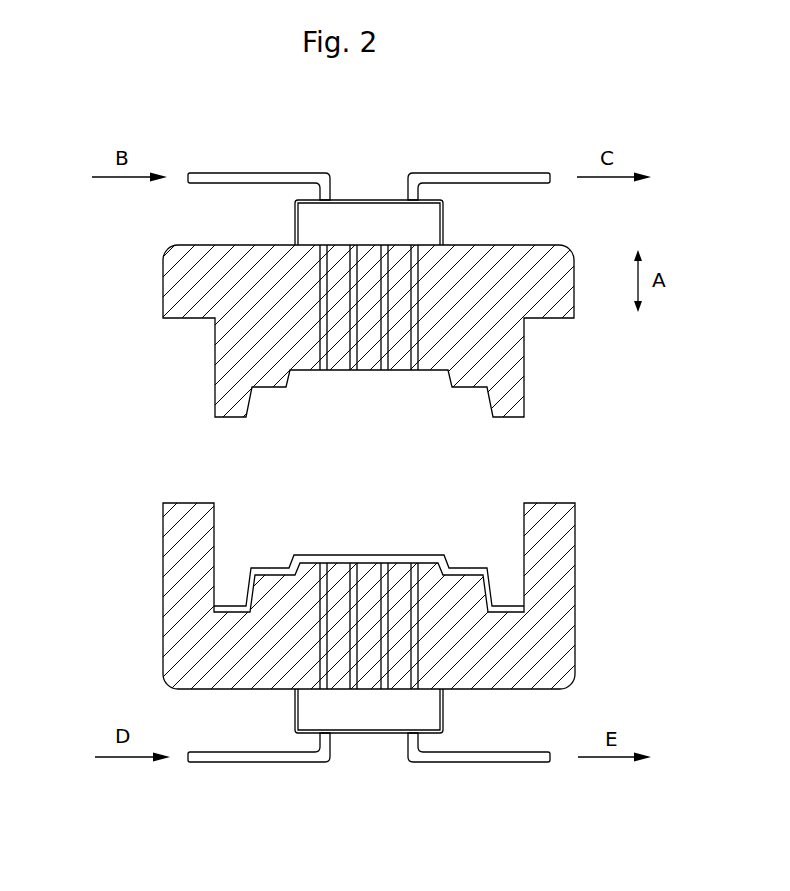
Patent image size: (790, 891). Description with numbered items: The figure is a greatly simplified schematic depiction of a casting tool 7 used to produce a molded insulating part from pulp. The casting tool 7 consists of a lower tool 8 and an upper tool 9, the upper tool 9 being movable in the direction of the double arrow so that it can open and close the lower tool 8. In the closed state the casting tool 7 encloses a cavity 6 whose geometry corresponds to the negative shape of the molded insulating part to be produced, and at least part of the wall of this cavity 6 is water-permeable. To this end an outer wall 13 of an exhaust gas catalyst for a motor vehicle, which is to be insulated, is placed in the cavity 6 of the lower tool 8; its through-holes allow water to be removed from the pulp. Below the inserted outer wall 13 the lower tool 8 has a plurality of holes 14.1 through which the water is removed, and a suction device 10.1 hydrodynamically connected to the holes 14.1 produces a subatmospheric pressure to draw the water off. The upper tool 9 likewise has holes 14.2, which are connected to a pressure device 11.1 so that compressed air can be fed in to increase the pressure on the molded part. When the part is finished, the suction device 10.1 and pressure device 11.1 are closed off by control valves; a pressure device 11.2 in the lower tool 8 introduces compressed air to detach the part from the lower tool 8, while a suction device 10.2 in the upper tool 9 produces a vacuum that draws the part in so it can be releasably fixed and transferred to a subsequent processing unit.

The cavity 6 is at (362, 528).
The casting tool 7 is at (131, 384).
The lower tool 8 is at (550, 587).
The upper tool 9 is at (562, 288).
The suction device 10.1 is at (488, 763).
The suction device 10.2 is at (482, 172).
The pressure device 11.1 is at (243, 172).
The pressure device 11.2 is at (250, 763).
The outer wall 13 is at (290, 555).
The holes 14.1 is at (432, 557).
The holes 14.2 is at (322, 372).